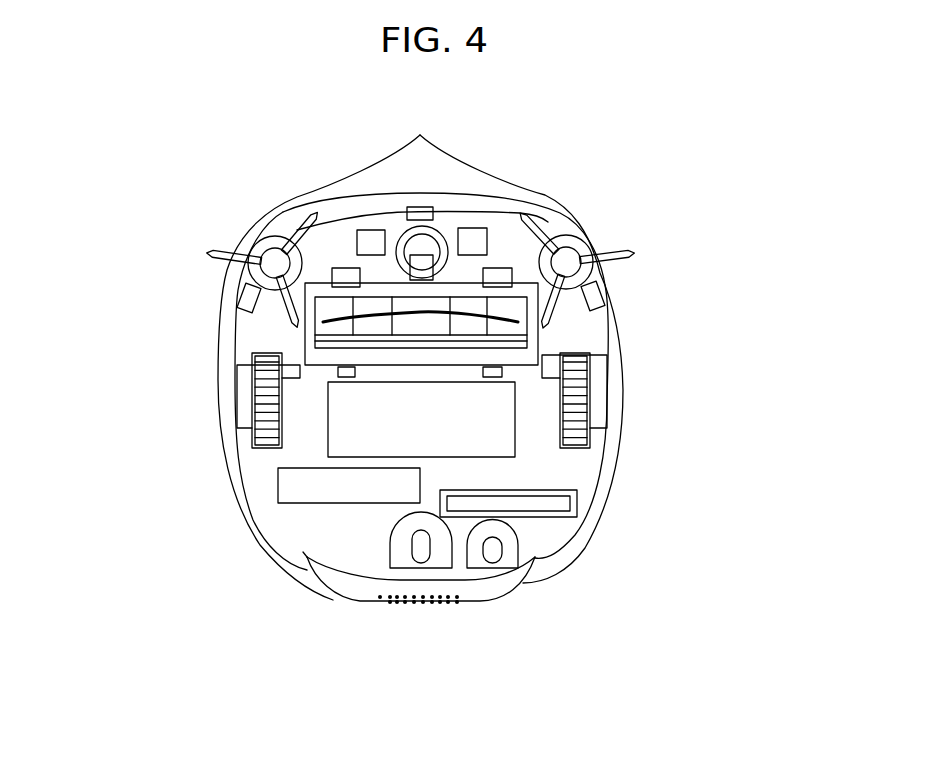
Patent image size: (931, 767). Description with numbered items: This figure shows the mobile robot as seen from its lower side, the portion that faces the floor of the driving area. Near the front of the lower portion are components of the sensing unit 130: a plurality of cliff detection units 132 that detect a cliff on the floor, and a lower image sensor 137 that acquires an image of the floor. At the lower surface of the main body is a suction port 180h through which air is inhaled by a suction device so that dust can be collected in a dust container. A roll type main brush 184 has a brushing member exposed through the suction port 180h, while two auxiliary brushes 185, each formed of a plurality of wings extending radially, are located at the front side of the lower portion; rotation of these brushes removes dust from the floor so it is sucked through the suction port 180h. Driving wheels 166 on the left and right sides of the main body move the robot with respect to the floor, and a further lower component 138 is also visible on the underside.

The sensing unit 130 is at (567, 230).
The cliff detection unit 132 is at (422, 215).
The lower image sensor 137 is at (472, 240).
The main brush 184 is at (512, 285).
The suction port 180h is at (338, 330).
The driving wheel 166 is at (262, 398).
The auxiliary brush 185 is at (207, 253).
The charging terminal 138 is at (552, 502).